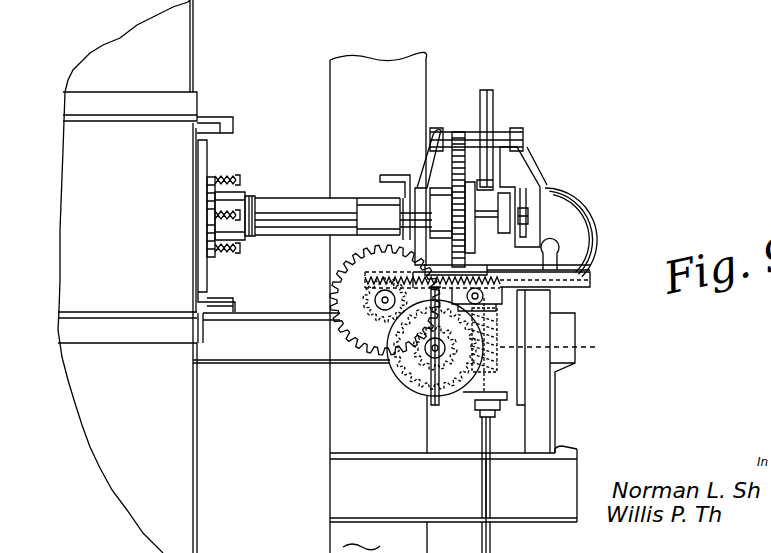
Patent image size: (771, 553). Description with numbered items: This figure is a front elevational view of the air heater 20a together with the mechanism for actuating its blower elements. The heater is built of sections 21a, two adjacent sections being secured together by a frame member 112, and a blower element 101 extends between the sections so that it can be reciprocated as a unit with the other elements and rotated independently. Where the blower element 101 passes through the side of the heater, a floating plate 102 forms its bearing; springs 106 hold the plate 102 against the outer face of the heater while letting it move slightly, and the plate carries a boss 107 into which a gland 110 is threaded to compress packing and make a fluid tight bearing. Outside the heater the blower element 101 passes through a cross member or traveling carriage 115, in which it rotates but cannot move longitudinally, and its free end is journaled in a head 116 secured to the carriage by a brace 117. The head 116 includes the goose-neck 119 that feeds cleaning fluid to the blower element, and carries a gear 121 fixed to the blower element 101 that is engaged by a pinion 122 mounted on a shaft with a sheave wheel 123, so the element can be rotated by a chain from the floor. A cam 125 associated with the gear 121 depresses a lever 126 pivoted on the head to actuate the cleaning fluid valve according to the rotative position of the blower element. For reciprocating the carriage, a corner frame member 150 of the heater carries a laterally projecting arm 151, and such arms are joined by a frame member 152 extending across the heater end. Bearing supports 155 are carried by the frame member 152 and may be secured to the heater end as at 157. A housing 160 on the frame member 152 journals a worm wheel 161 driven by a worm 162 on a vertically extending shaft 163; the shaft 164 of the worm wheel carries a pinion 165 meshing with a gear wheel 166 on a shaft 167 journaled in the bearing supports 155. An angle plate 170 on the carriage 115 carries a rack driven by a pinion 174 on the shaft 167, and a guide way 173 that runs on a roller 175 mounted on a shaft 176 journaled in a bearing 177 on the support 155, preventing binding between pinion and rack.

The air heater 20a is at (148, 100).
The section 21a is at (175, 446).
The frame member 112 is at (197, 133).
The plate 102 is at (212, 255).
The securing point of bearing support to air heater end 157 is at (233, 312).
The springs 106 is at (224, 180).
The boss 107 is at (237, 198).
The gland 110 is at (252, 232).
The blower element 101 is at (274, 203).
The cross member or traveling carriage 115 is at (390, 174).
The angle plate 170 is at (377, 246).
The corner frame member 150 is at (400, 73).
The brace 117 is at (432, 128).
The pinion 122 is at (460, 130).
The sheave wheel 123 is at (493, 110).
The gear 121 is at (467, 177).
The head 116 is at (540, 187).
The cam 125 is at (512, 214).
The goose-neck 119 is at (595, 237).
The lever 126 is at (540, 258).
The guide way 173 is at (570, 283).
The roller 175 is at (500, 294).
The shaft 176 is at (470, 305).
The bearing 177 is at (487, 345).
The pinion 165 is at (442, 414).
The shaft 164 is at (433, 350).
The worm wheel 161 is at (398, 412).
The shaft 167 is at (383, 307).
The pinion 174 is at (378, 352).
The gear wheel 166 is at (340, 328).
The bearing support 155 is at (263, 350).
The housing 160 is at (505, 378).
The worm 162 is at (566, 383).
The frame member 152 is at (562, 450).
The vertically extending shaft 163 is at (493, 484).
The arm 151 is at (524, 507).